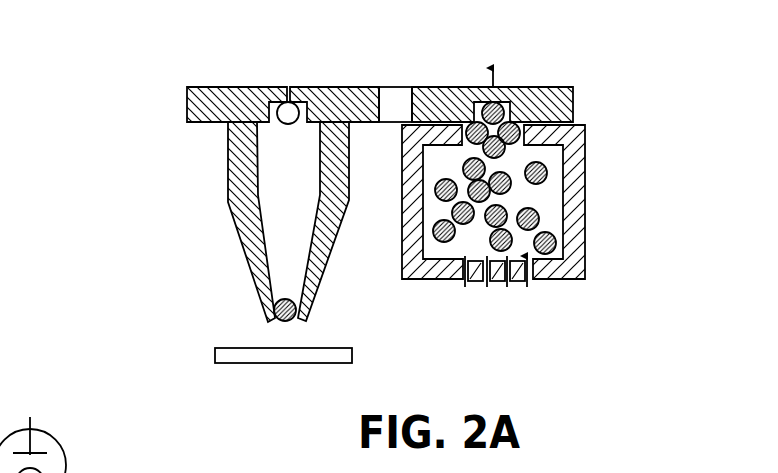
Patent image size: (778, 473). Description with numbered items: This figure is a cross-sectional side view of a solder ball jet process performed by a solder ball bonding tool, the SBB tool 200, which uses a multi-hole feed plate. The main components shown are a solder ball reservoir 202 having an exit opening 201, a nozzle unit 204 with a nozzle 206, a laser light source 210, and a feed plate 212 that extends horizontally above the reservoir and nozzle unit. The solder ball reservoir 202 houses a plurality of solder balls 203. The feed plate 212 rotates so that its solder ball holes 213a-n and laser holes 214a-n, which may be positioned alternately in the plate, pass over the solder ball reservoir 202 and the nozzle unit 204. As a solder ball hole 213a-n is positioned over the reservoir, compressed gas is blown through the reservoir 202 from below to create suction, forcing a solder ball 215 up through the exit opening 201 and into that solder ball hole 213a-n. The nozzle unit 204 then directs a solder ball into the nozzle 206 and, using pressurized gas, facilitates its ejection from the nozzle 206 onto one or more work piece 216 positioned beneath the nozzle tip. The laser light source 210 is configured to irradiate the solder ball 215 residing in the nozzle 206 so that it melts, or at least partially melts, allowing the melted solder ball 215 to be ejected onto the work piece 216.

The SBB tool 200 is at (137, 74).
The exit opening 201 is at (517, 146).
The solder ball reservoir 202 is at (550, 183).
The solder balls 203 is at (553, 242).
The nozzle unit 204 is at (232, 210).
The nozzle 206 is at (256, 282).
The laser light source 210 is at (68, 453).
The feed plate 212 is at (538, 88).
The solder ball holes 213a-n is at (274, 124).
The laser holes 214a-n is at (393, 88).
The solder ball 215 is at (448, 88).
The work piece 216 is at (333, 363).